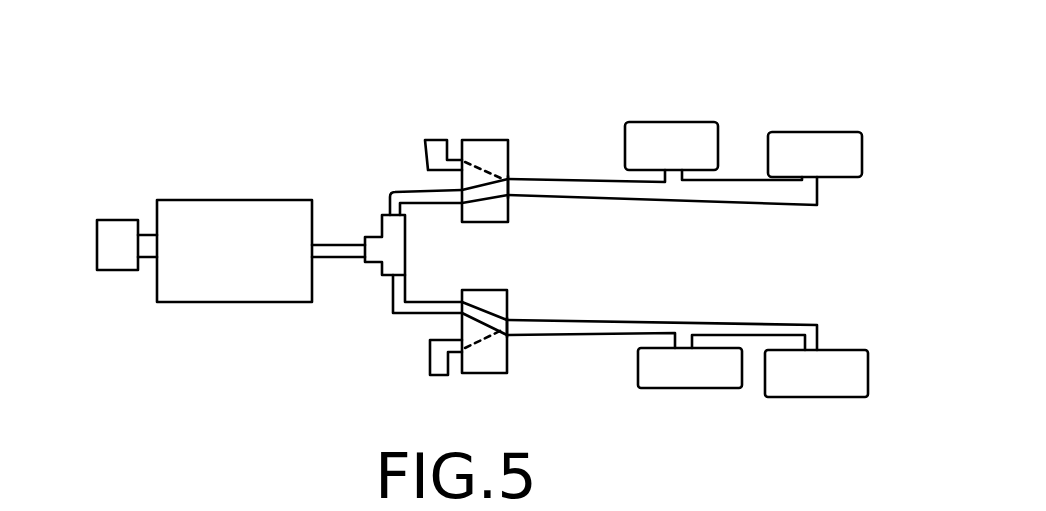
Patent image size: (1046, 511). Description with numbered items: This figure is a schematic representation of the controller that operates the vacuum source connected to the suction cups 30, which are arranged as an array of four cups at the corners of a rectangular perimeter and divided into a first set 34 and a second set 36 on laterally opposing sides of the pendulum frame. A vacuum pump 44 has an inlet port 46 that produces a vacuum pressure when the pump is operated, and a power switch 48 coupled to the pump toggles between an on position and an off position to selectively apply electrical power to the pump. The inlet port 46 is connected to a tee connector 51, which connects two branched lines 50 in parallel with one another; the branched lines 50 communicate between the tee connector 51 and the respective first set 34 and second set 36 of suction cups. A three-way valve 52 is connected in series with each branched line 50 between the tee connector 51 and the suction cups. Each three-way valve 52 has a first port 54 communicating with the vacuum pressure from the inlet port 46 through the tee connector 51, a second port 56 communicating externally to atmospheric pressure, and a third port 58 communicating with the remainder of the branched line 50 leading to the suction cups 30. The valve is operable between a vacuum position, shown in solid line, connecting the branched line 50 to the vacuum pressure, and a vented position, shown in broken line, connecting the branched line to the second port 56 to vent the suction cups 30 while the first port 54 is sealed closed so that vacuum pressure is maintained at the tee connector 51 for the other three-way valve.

The suction cups 30 is at (746, 259).
The first set 34 is at (882, 372).
The second set 36 is at (878, 157).
The vacuum pump 44 is at (207, 200).
The inlet port 46 is at (337, 245).
The power switch 48 is at (120, 220).
The branched lines 50 is at (583, 198).
The tee connector 51 is at (405, 252).
The 3-way valve 52 is at (503, 130).
The first port 54 is at (460, 191).
The second port 56 is at (462, 160).
The third port 58 is at (508, 180).